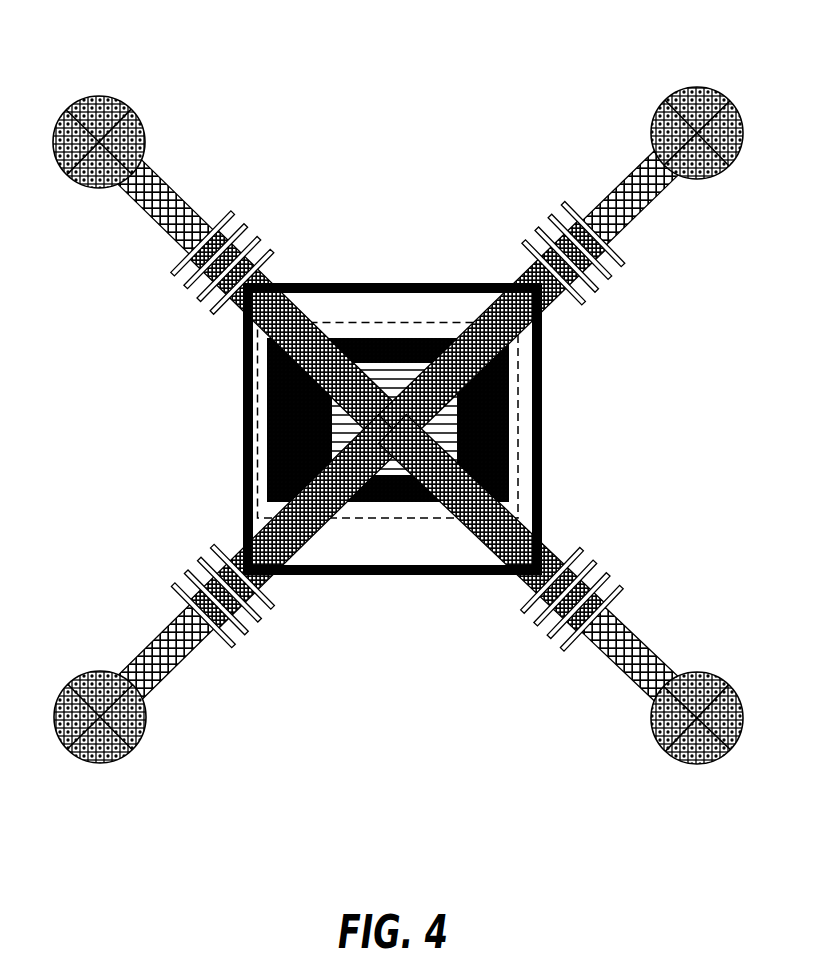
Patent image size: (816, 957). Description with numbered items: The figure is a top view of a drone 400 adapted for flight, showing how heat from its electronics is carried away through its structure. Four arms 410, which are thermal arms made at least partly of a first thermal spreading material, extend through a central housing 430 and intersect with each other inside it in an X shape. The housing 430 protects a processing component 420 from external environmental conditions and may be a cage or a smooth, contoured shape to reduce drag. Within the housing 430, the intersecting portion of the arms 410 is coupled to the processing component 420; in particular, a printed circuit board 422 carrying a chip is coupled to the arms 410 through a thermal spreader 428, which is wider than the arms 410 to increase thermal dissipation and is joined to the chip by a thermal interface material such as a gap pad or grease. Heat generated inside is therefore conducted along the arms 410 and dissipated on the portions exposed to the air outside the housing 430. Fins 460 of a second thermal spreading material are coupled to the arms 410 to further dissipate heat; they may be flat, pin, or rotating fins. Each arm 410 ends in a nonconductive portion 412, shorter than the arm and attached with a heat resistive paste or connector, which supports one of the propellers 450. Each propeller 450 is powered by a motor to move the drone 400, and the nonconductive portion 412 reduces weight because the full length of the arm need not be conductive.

The drone 400 is at (382, 58).
The arms 410 is at (243, 528).
The nonconductive portion 412 is at (160, 202).
The processing component 420 is at (370, 317).
The printed circuit board 422 is at (405, 497).
The thermal spreader 428 is at (387, 470).
The housing 430 is at (450, 283).
The propellers 450 is at (85, 109).
The fins 460 is at (233, 208).